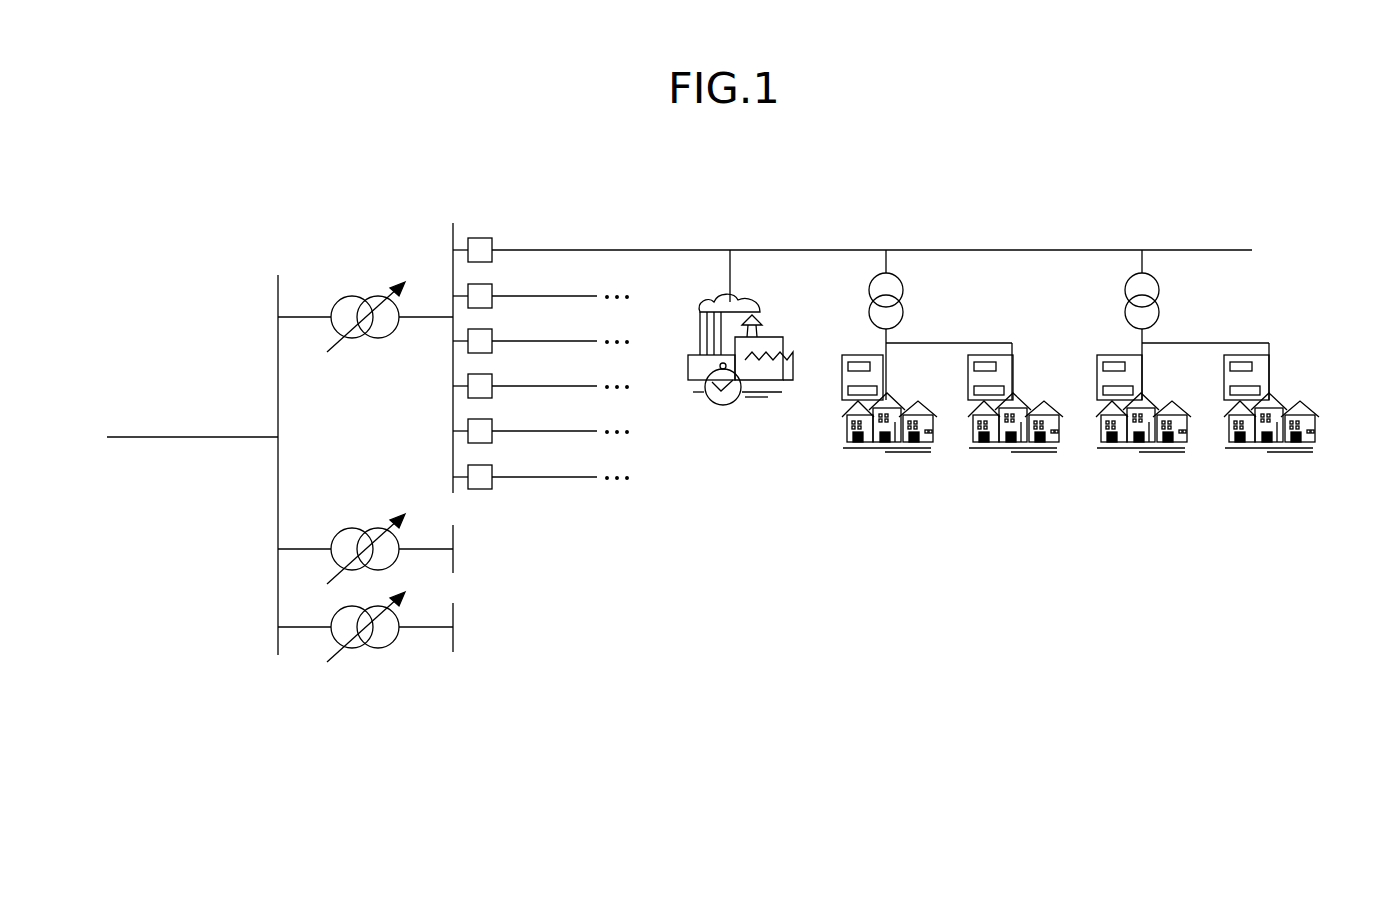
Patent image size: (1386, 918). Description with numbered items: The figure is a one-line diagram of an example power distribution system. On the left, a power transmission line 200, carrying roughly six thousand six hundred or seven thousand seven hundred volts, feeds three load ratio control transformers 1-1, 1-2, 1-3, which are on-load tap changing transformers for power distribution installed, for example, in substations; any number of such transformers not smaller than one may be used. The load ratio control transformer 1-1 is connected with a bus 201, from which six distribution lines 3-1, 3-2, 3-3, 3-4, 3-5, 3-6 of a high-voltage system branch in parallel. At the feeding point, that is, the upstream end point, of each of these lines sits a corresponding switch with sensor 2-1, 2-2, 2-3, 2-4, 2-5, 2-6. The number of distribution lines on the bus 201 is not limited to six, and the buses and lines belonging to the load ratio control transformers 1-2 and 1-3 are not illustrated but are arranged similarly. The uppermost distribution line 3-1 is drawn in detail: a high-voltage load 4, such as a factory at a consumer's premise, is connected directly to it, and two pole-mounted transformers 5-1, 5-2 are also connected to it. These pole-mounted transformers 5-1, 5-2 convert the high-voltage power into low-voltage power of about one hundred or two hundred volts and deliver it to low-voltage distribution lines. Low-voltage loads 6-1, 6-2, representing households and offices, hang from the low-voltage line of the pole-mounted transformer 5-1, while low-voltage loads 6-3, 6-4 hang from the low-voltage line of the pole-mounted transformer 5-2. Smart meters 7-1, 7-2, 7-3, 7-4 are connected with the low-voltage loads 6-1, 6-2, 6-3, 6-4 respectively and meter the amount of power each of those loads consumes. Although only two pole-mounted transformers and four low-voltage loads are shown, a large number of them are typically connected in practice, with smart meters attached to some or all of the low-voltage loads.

The power transmission line 200 is at (186, 435).
The bus 201 is at (456, 232).
The load ratio control transformer 1-1 is at (354, 296).
The load ratio control transformer 1-2 is at (354, 528).
The load ratio control transformer 1-3 is at (395, 648).
The switch with sensor 2-1 is at (494, 247).
The switch with sensor 2-2 is at (494, 293).
The switch with sensor 2-3 is at (494, 338).
The switch with sensor 2-4 is at (494, 383).
The switch with sensor 2-5 is at (494, 428).
The switch with sensor 2-6 is at (494, 474).
The distribution line 3-1 is at (586, 249).
The distribution line 3-2 is at (586, 295).
The distribution line 3-3 is at (586, 340).
The distribution line 3-4 is at (586, 385).
The distribution line 3-5 is at (586, 430).
The distribution line 3-6 is at (586, 476).
The high-voltage load 4 is at (758, 306).
The pole-mounted transformer 5-1 is at (903, 287).
The pole-mounted transformer 5-2 is at (1159, 287).
The low-voltage load 6-1 is at (922, 401).
The low-voltage load 6-2 is at (1051, 401).
The low-voltage load 6-3 is at (1181, 401).
The low-voltage load 6-4 is at (1309, 401).
The smart meter 7-1 is at (850, 355).
The smart meter 7-2 is at (993, 355).
The smart meter 7-3 is at (1107, 355).
The smart meter 7-4 is at (1249, 355).